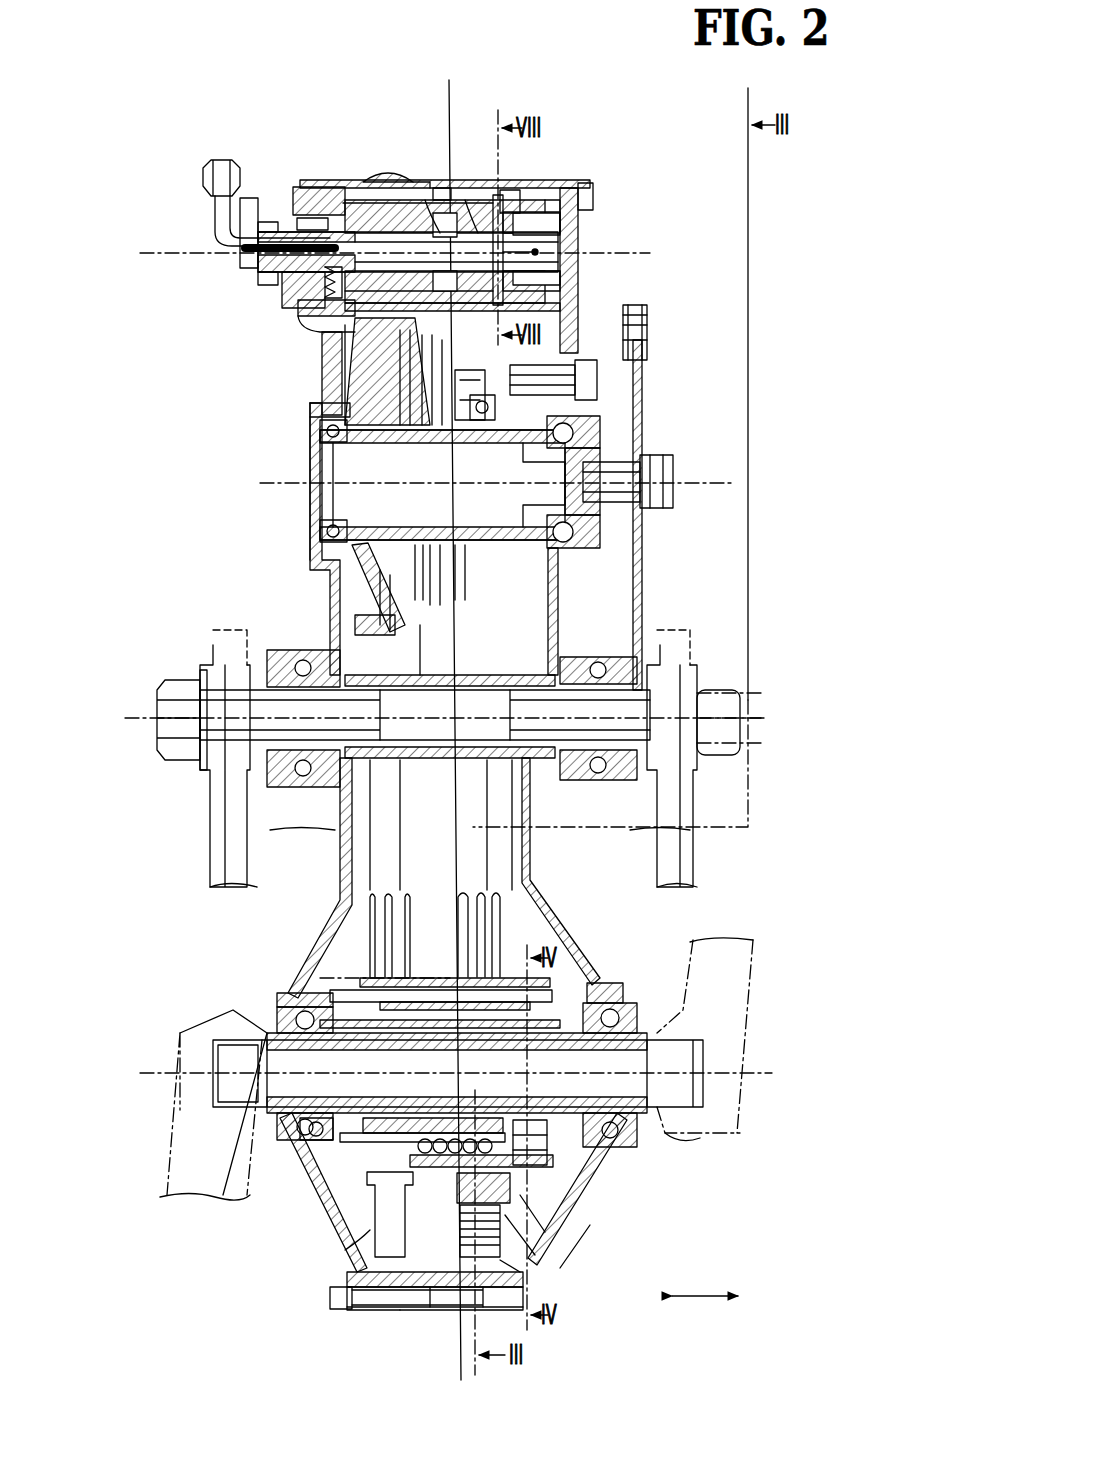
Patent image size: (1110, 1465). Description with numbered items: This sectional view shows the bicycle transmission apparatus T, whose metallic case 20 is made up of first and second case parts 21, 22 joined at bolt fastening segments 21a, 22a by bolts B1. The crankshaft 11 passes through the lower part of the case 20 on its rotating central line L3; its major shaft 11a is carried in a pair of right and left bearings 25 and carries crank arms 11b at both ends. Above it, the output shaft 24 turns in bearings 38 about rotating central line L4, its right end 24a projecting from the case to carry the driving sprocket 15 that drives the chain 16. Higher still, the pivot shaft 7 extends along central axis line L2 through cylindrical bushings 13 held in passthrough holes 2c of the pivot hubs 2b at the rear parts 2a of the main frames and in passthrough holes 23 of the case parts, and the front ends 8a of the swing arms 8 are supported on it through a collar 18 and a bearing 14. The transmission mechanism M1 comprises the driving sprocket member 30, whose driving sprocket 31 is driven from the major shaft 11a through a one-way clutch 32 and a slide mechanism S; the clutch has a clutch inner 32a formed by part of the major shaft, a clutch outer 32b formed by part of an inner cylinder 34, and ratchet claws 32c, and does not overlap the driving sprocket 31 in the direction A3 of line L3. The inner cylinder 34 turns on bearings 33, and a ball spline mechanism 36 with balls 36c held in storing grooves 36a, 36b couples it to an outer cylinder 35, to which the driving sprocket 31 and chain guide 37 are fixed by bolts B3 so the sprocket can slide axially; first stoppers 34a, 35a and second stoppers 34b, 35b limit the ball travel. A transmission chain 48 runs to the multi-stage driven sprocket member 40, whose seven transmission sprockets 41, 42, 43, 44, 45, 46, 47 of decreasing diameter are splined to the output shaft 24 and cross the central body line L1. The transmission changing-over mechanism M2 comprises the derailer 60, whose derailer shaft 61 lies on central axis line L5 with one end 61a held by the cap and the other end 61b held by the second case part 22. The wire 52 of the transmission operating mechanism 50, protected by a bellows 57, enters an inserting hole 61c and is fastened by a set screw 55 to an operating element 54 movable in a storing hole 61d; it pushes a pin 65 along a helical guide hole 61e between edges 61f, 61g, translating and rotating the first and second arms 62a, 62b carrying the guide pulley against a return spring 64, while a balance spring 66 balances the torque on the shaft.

The rear part 2a is at (222, 845).
The pivot hub 2b is at (742, 750).
The passthrough hole 2c is at (732, 690).
The pivot shaft 7 is at (405, 775).
The swing arm 8 is at (203, 720).
The front end 8a is at (230, 640).
The crankshaft 11 is at (246, 1185).
The major shaft 11a is at (702, 1135).
The crank arm 11b is at (745, 1010).
The cylindrical bushing 13 is at (352, 690).
The bearing 14 is at (300, 650).
The driving sprocket 15 is at (642, 600).
The chain 16 is at (645, 365).
The collar 18 is at (330, 693).
The case 20 is at (419, 176).
The first case part 21 is at (377, 176).
The bolt fastening segment 21a is at (350, 1310).
The second case part 22 is at (442, 800).
The bolt fastening segment 22a is at (415, 1310).
The passthrough hole 23 is at (426, 690).
The output shaft 24 is at (325, 513).
The right end 24a is at (620, 470).
The bearing 25 is at (324, 320).
The driving sprocket member 30 is at (457, 1073).
The driving sprocket 31 is at (385, 937).
The one-way clutch 32 is at (690, 1185).
The clutch inner 32a is at (590, 1215).
The clutch outer 32b is at (576, 1252).
The ratchet claw 32c is at (583, 1235).
The bearing 33 is at (370, 1097).
The inner cylinder 34 is at (440, 1118).
The first stopper 34a is at (550, 1097).
The second stopper 34b is at (330, 1120).
The outer cylinder 35 is at (458, 1160).
The first stopper 35a is at (380, 1172).
The second stopper 35b is at (525, 1165).
The ball spline mechanism 36 is at (618, 1240).
The storing groove 36a is at (520, 1272).
The storing groove 36b is at (545, 1232).
The ball 36c is at (535, 1255).
The chain guide 37 is at (500, 905).
The bearing 38 is at (320, 549).
The driven sprocket member 40 is at (378, 598).
The transmission sprocket 41 is at (345, 352).
The transmission sprocket 42 is at (360, 370).
The transmission sprocket 43 is at (330, 398).
The transmission sprocket 44 is at (465, 390).
The transmission sprocket 45 is at (472, 405).
The transmission sprocket 46 is at (468, 580).
The transmission sprocket 47 is at (476, 555).
The transmission chain 48 is at (260, 362).
The transmission operating mechanism 50 is at (246, 196).
The wire 52 is at (215, 192).
The operating element 54 is at (540, 252).
The set screw 55 is at (560, 288).
The bellows 57 is at (203, 172).
The derailer 60 is at (330, 200).
The derailer shaft 61 is at (403, 268).
The one end 61a is at (270, 222).
The other end 61b is at (560, 226).
The inserting hole 61c is at (284, 282).
The storing hole 61d is at (432, 388).
The guide hole 61e is at (470, 195).
The one edge 61f is at (592, 195).
The other edge 61g is at (440, 190).
The first arm 62a is at (462, 302).
The second arm 62b is at (522, 190).
The return spring 64 is at (442, 186).
The pin 65 is at (566, 190).
The balance spring 66 is at (298, 314).
The central body line L1 is at (449, 103).
The central axis line L2 is at (142, 740).
The rotating central line L3 is at (152, 1062).
The rotating central line L4 is at (262, 483).
The central axis line L5 is at (165, 262).
The transmission mechanism M1 is at (522, 940).
The transmission changing-over mechanism M2 is at (310, 137).
The transmission apparatus T is at (205, 410).
The slide mechanism S is at (345, 1250).
The bolt B1 is at (330, 1298).
The bolt B3 is at (462, 1243).
The rotating central line direction A3 is at (752, 1264).